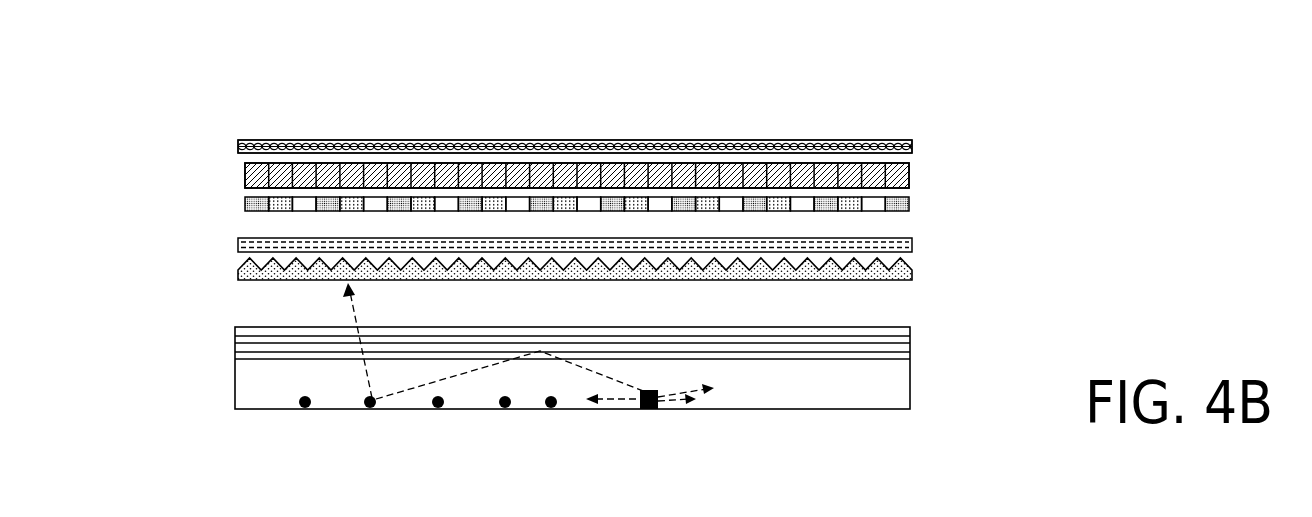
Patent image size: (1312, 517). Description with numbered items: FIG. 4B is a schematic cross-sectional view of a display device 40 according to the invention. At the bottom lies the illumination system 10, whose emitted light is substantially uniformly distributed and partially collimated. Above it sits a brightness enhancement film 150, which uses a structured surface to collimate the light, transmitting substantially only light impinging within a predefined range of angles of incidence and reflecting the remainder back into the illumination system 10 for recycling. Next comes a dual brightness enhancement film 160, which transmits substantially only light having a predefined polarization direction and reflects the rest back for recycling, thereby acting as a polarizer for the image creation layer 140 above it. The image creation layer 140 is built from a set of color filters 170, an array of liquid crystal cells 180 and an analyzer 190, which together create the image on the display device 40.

The display device 40 is at (826, 82).
The image creation layer 140 is at (941, 140).
The analyzer 190 is at (238, 147).
The array of liquid crystal cells 180 is at (245, 176).
The set of color filters 170 is at (245, 206).
The dual brightness enhancement film 160 is at (238, 245).
The brightness enhancement film 150 is at (238, 272).
The illumination system 10 is at (942, 325).